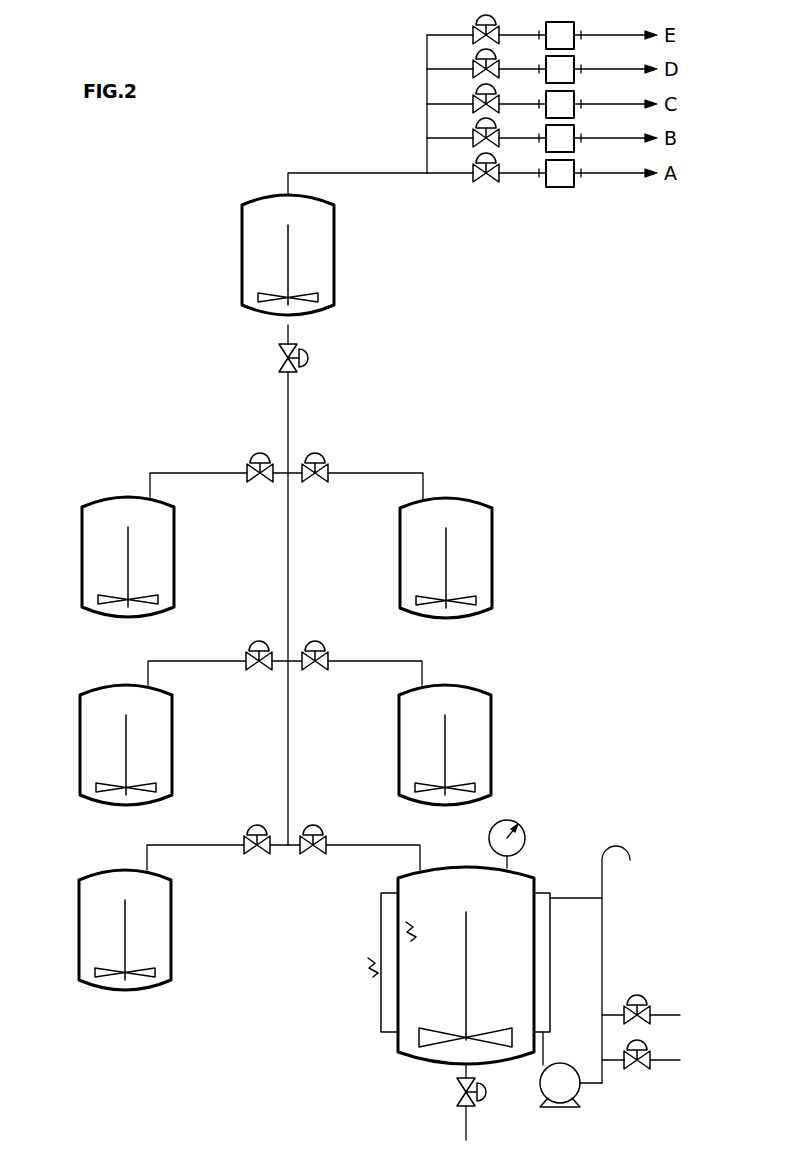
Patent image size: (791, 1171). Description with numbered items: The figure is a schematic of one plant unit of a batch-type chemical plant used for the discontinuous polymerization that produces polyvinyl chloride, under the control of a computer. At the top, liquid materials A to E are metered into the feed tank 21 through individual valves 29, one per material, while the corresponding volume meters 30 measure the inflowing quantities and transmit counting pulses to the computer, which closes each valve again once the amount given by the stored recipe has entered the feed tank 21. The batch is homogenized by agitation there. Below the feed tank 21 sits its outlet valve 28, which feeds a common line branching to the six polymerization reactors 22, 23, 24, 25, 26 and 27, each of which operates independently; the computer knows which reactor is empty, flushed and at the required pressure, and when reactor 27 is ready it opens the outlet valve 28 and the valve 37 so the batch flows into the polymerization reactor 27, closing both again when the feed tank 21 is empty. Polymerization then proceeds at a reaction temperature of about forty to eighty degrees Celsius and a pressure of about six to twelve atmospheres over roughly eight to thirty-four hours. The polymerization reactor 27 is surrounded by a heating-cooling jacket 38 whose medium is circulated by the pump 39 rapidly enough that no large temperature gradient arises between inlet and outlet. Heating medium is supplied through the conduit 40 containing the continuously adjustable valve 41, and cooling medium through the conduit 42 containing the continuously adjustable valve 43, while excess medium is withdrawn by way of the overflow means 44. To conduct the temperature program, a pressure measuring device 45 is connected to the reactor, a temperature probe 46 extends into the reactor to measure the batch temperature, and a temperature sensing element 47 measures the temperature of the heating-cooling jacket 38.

The feed tank 21 is at (334, 292).
The polymerization reactor 22 is at (82, 553).
The polymerization reactor 23 is at (492, 527).
The polymerization reactor 24 is at (79, 748).
The polymerization reactor 25 is at (492, 725).
The polymerization reactor 26 is at (78, 950).
The polymerization reactor 27 is at (411, 1046).
The outlet valve 28 is at (309, 362).
The individual valves 29 is at (472, 180).
The volume meters 30 is at (573, 188).
The valve 37 is at (322, 855).
The heating-cooling jacket 38 is at (385, 1016).
The pump 39 is at (545, 1092).
The conduit 40 is at (680, 1012).
The continuously adjustable valve 41 is at (652, 1003).
The conduit 42 is at (680, 1065).
The continuously adjustable valve 43 is at (649, 1068).
The overflow means 44 is at (628, 848).
The pressure measuring device 45 is at (525, 840).
The temperature probe 46 is at (430, 940).
The temperature sensing element 47 is at (390, 975).